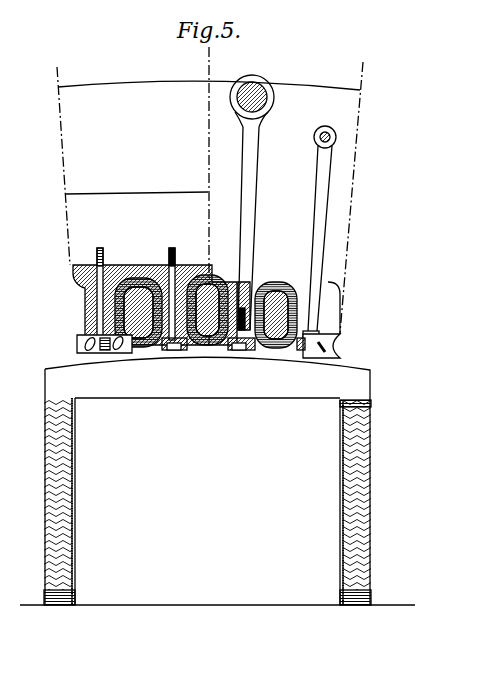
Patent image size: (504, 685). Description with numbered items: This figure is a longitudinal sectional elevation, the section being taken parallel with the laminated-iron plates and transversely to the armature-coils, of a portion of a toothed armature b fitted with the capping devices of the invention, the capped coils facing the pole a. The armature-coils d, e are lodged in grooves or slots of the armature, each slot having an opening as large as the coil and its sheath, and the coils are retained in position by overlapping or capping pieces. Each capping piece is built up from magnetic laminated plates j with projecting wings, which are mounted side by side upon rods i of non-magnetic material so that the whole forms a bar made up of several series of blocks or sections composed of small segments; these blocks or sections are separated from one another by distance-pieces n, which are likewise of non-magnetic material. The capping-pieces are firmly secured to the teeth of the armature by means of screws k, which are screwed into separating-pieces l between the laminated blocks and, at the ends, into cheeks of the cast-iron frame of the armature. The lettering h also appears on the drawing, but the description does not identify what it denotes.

The pole a is at (217, 481).
The toothed armature b is at (210, 196).
The armature-coil d is at (206, 311).
The armature-coil e is at (190, 303).
The pin h is at (242, 358).
The rod i is at (84, 349).
The magnetic laminated plate j is at (323, 337).
The screw k is at (104, 310).
The separating-piece l is at (246, 243).
The distance-piece n is at (95, 351).